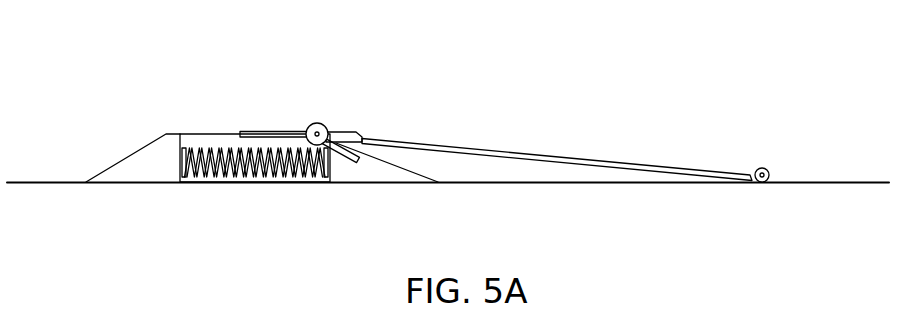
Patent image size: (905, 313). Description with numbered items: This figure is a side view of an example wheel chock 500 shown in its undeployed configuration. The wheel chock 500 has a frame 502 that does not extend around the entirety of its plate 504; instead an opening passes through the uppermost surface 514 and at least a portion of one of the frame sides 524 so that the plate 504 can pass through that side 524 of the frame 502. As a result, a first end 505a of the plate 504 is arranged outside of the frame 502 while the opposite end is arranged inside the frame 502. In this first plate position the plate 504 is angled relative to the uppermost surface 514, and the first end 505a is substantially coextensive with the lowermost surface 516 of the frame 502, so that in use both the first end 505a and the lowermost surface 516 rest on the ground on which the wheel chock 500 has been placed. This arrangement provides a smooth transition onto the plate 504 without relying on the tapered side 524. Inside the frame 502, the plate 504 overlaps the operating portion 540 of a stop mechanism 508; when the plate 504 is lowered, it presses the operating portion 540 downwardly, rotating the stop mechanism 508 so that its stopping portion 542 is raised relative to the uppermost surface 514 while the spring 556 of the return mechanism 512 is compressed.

The wheel chock 500 is at (154, 52).
The frame 502 is at (149, 172).
The plate 504 is at (593, 160).
The first end 505a is at (710, 170).
The stop mechanism 508 is at (291, 118).
The return mechanism 512 is at (259, 199).
The uppermost surface 514 is at (202, 134).
The lowermost surface 516 is at (108, 182).
The frame side 524 is at (127, 157).
The operating portion 540 is at (338, 153).
The stopping portion 542 is at (265, 131).
The spring 556 is at (224, 173).